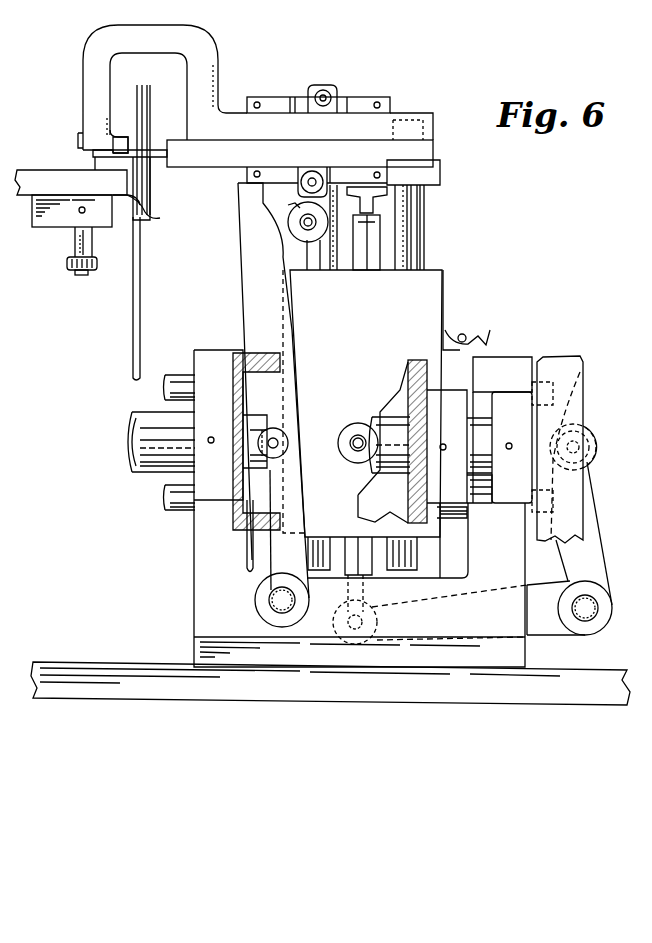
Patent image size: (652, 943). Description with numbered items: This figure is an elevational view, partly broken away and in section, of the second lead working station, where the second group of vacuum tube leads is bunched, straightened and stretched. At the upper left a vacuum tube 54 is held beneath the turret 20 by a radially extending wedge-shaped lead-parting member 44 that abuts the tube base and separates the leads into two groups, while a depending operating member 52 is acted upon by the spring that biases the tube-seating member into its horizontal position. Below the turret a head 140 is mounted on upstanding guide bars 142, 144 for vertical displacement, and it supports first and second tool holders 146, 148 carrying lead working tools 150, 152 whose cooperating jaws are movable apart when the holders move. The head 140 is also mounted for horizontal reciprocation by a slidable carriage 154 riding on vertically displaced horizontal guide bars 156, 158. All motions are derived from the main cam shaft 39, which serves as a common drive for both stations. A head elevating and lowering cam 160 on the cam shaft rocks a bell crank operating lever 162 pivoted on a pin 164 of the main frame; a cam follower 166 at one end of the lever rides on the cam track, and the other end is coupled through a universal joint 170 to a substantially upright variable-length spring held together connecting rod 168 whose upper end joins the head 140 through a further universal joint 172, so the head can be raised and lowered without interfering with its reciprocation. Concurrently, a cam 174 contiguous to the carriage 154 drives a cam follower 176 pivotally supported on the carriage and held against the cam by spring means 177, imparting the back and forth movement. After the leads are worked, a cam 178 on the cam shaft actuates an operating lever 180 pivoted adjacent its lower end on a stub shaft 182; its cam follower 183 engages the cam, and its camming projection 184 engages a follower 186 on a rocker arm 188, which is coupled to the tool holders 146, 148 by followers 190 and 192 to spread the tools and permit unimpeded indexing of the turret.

The turret 20 is at (50, 240).
The main cam shaft 39 is at (142, 437).
The lead-parting member 44 is at (93, 162).
The operating member 52 is at (68, 265).
The vacuum tube 54 is at (150, 199).
The head 140 is at (365, 98).
The guide bar 142 is at (310, 257).
The guide bar 144 is at (423, 253).
The first tool holder 146 is at (191, 180).
The second tool holder 148 is at (228, 64).
The lead working tool 150 is at (155, 152).
The lead working tool 152 is at (120, 137).
The slidable carriage 154 is at (435, 314).
The horizontal guide bar 156 is at (177, 512).
The horizontal guide bar 158 is at (180, 380).
The head elevating and lowering cam 160 is at (550, 360).
The bell crank operating lever 162 is at (593, 536).
The pin 164 is at (598, 610).
The cam follower 166 is at (583, 437).
The connecting rod 168 is at (373, 240).
The universal joint 170 is at (362, 622).
The universal joint 172 is at (372, 194).
The cam 174 is at (403, 375).
The cam follower 176 is at (350, 427).
The spring means 177 is at (492, 334).
The cam 178 is at (282, 392).
The operating lever 180 is at (268, 565).
The stub shaft 182 is at (277, 600).
The cam follower 183 is at (289, 432).
The camming projection 184 is at (247, 229).
The follower 186 is at (315, 230).
The rocker arm 188 is at (295, 205).
The follower 190 is at (326, 169).
The follower 192 is at (324, 90).